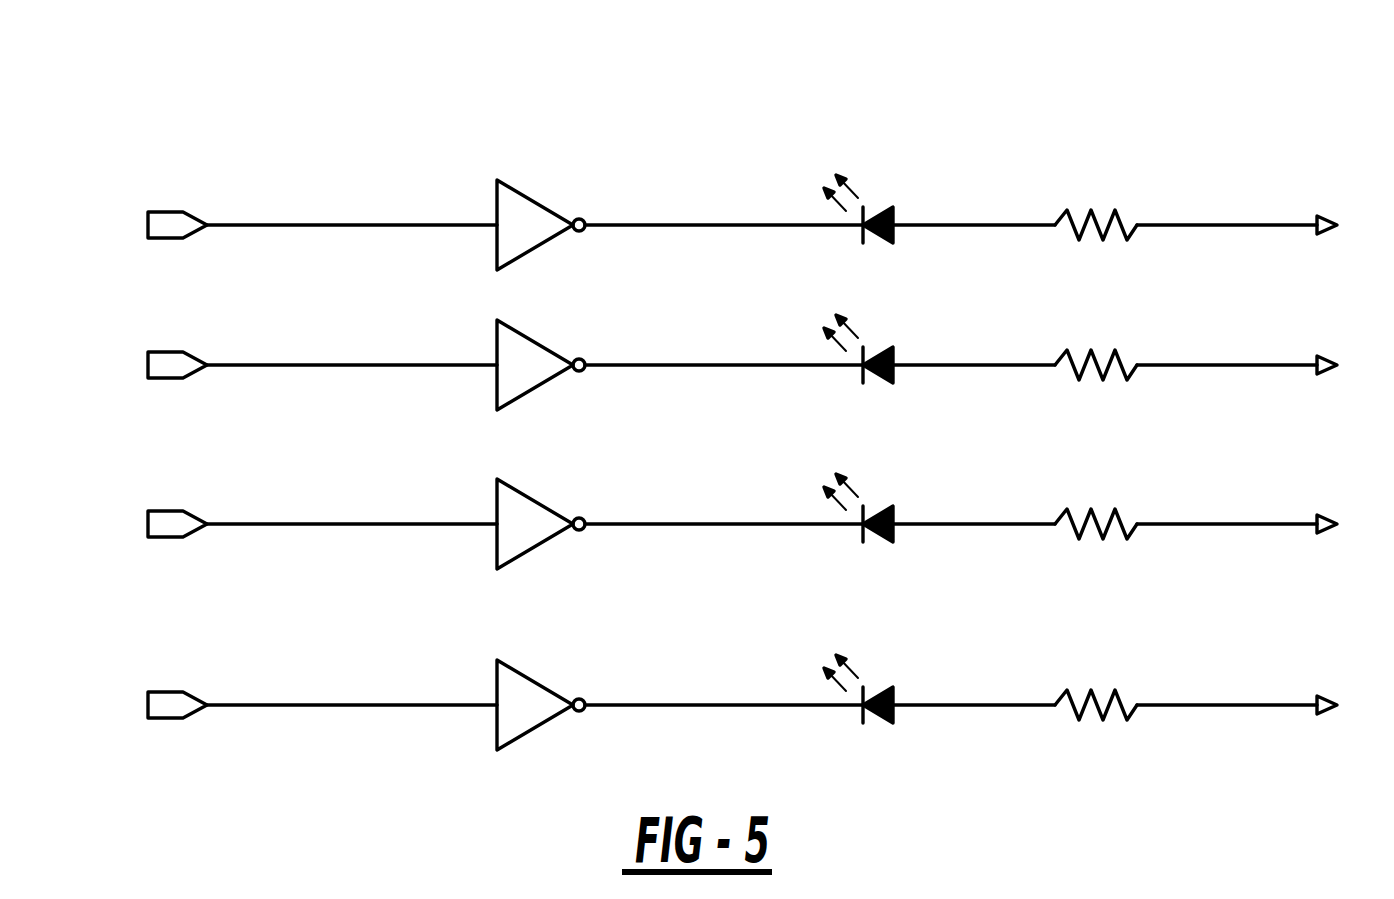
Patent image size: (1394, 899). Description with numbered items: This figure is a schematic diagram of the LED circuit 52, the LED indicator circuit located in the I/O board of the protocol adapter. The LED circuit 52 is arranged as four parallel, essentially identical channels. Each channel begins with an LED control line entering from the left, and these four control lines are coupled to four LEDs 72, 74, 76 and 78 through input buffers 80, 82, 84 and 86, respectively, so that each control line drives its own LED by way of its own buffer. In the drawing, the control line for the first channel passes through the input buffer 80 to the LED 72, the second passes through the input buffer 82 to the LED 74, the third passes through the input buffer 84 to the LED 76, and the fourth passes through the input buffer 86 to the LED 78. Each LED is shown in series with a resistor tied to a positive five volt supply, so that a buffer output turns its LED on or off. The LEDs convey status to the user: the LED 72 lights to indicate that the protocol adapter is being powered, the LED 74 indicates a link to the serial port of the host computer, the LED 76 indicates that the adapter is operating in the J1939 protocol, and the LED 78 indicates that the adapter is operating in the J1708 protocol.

The LED circuit 52 is at (709, 381).
The LED 72 is at (888, 210).
The LED 74 is at (888, 350).
The LED 76 is at (888, 509).
The LED 78 is at (888, 690).
The input buffer 80 is at (537, 200).
The input buffer 82 is at (537, 340).
The input buffer 84 is at (537, 499).
The input buffer 86 is at (537, 680).